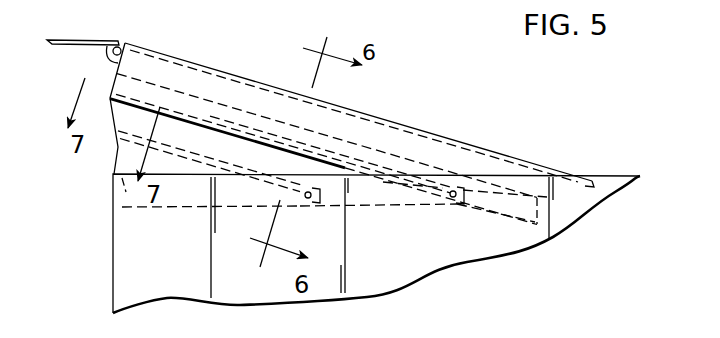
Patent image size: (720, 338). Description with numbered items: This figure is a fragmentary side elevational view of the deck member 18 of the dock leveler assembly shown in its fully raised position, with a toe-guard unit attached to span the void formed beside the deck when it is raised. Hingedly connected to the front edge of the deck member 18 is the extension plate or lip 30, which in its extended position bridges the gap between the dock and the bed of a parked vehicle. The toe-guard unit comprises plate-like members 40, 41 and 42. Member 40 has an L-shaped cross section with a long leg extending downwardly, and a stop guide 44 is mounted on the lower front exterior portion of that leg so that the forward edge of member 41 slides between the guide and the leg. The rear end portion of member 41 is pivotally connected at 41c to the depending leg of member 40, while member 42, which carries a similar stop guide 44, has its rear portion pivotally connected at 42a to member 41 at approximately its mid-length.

The deck member 18 is at (232, 28).
The extension plate or lip 30 is at (88, 3).
The plate-like member 40 is at (492, 198).
The plate-like member 41 is at (383, 189).
The pivotal connection 41c is at (458, 190).
The plate-like member 42 is at (173, 191).
The pivotal connection 42a is at (312, 187).
The stop guide 44 is at (118, 142).